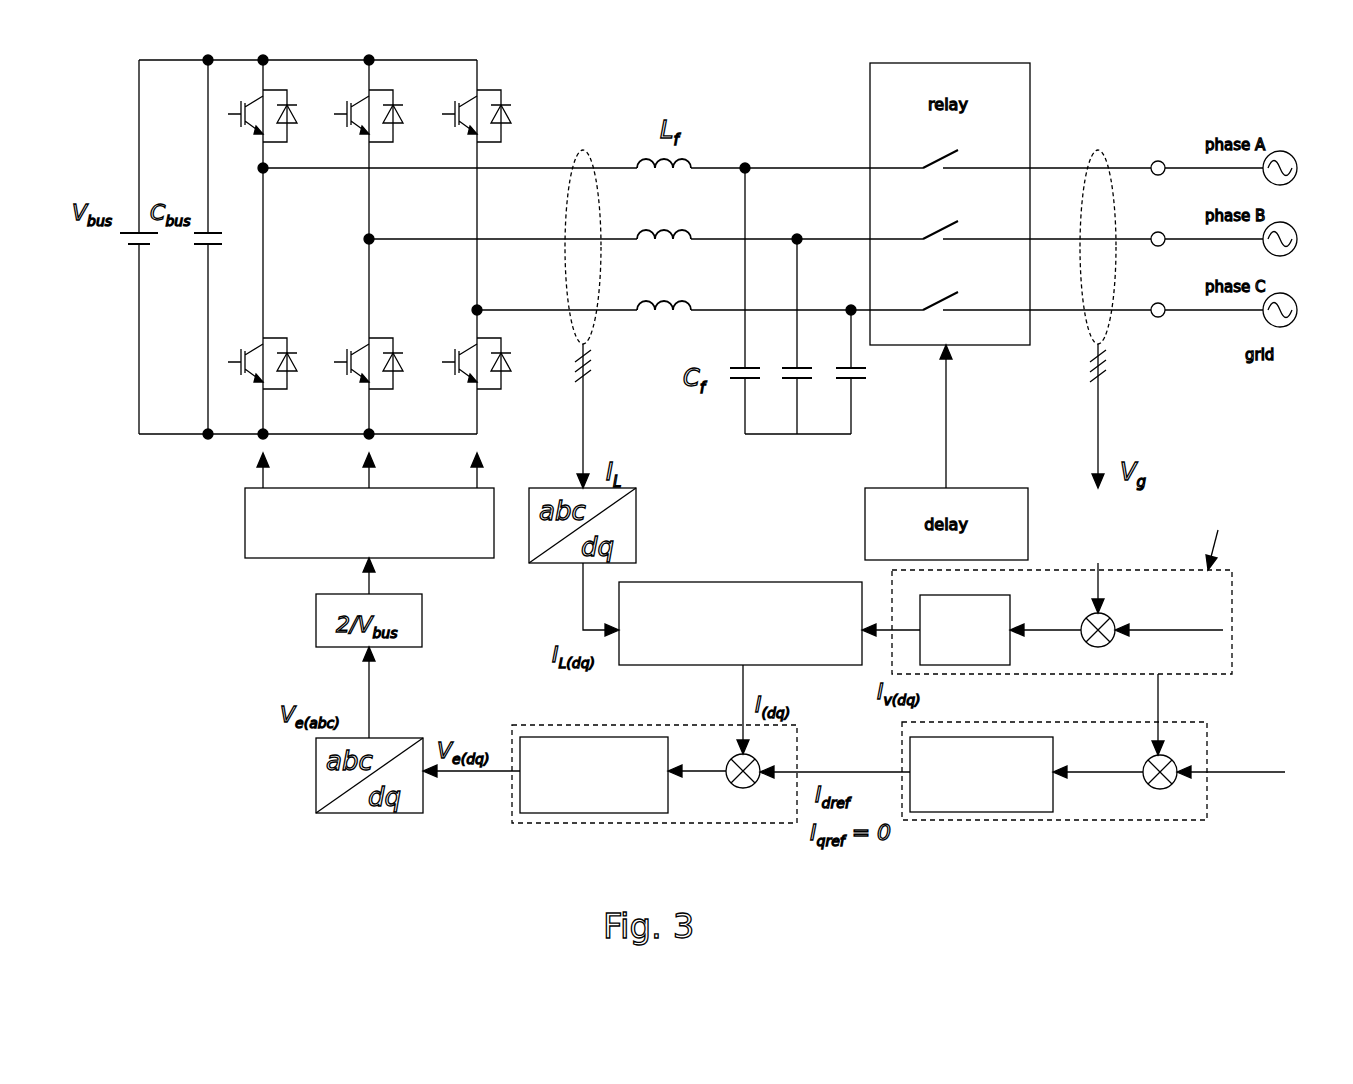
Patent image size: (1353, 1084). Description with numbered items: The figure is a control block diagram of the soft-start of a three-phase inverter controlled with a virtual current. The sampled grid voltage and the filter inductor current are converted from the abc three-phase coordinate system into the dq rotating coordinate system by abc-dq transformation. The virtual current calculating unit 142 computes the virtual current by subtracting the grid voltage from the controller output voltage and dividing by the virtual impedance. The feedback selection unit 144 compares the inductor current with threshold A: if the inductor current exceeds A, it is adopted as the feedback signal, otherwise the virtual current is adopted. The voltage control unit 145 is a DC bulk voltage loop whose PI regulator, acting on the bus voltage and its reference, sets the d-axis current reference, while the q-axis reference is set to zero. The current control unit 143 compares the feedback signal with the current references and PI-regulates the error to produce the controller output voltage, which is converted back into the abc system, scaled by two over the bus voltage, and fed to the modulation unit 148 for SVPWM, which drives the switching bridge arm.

The virtual current calculating unit 142 is at (1232, 605).
The current control unit 143 is at (705, 823).
The feedback selection unit 144 is at (815, 582).
The voltage control unit 145 is at (1108, 820).
The modulation unit 148 is at (285, 558).